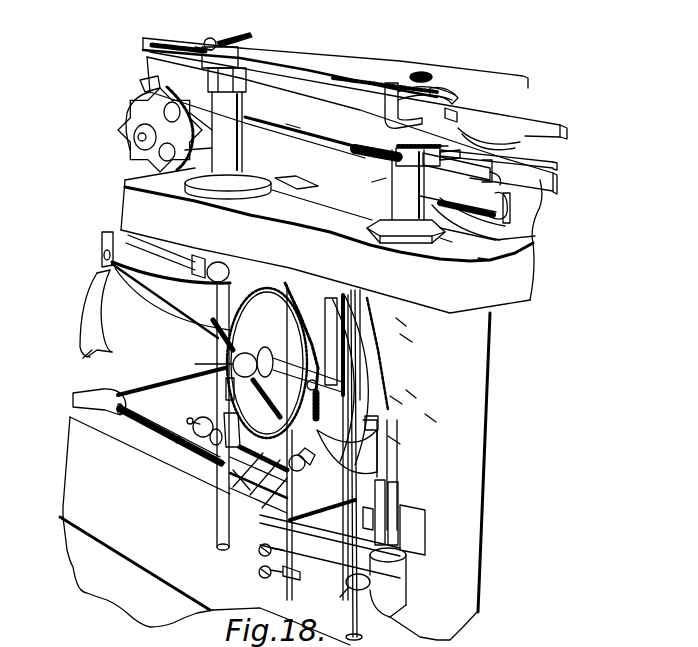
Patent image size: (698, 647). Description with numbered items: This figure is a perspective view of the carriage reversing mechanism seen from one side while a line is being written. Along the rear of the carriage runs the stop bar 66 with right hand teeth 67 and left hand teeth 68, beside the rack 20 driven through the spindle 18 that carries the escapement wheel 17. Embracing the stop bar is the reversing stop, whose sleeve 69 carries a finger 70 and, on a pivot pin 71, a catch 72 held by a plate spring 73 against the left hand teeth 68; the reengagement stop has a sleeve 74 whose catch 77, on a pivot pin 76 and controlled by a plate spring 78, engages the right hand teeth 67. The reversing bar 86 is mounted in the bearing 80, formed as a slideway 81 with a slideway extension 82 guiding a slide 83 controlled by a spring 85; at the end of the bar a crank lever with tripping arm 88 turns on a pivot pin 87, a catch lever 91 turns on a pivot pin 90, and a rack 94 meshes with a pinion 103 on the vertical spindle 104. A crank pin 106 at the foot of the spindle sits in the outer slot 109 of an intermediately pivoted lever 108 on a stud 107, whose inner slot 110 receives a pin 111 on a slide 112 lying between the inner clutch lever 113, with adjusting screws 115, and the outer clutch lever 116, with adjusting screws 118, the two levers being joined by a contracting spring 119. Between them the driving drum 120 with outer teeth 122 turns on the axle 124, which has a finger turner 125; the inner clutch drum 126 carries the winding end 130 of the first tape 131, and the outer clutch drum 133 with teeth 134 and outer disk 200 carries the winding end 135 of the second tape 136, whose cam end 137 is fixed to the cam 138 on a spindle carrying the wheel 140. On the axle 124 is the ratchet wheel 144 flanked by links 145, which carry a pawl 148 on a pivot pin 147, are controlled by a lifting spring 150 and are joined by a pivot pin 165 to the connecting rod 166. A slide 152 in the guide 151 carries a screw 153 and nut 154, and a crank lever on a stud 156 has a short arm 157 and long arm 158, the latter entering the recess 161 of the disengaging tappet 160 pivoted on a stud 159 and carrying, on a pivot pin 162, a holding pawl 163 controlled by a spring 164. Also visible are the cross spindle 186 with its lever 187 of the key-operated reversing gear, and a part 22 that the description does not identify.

The stop bar 66 is at (277, 72).
The right hand teeth 67 is at (160, 42).
The catch 77 is at (200, 44).
The pivot pin 76 is at (206, 40).
The sleeve 74 is at (221, 66).
The plate spring 78 is at (238, 38).
The reversing bar 86 is at (293, 126).
The bar 22 is at (337, 57).
The rack 94 is at (380, 140).
The finger 70 is at (395, 90).
The plate spring 73 is at (432, 80).
The pivot pin 71 is at (445, 92).
The vertical spindle 104 is at (430, 148).
The left hand teeth 68 is at (387, 77).
The sleeve 69 is at (422, 73).
The catch 72 is at (436, 140).
The slideway 81 is at (420, 153).
The pinion 103 is at (445, 158).
The escapement wheel 17 is at (143, 98).
The spindle 18 is at (143, 137).
The first tape 131 is at (230, 147).
The rack 20 is at (350, 124).
The catch lever 91 is at (500, 149).
The tripping arm 88 is at (553, 163).
The pivot pin 87 is at (557, 183).
The inner clutch drum 126 is at (382, 182).
The bearing 80 is at (406, 194).
The slide 83 is at (473, 197).
The slideway extension 82 is at (508, 215).
The spring 85 is at (455, 232).
The pivot pin 90 is at (445, 240).
The winding end 130 is at (483, 260).
The pivot pin 147 is at (288, 280).
The pawl 148 is at (322, 305).
The wheel 140 is at (103, 266).
The cam 138 is at (98, 317).
The second tape 136 is at (100, 330).
The cam end 137 is at (88, 355).
The finger turner 125 is at (210, 343).
The axle 124 is at (205, 370).
The ratchet wheel 144 is at (267, 363).
The links 145 is at (277, 368).
The disengaging tappet 160 is at (226, 383).
The stud 159 is at (196, 421).
The recess 161 is at (226, 424).
The lever 187 is at (100, 398).
The cross spindle 186 is at (134, 418).
The screw 153 is at (157, 427).
The nut 154 is at (176, 442).
The long arm 158 is at (196, 450).
The guide 151 is at (216, 460).
The slide 152 is at (240, 450).
The stud 156 is at (228, 500).
The short arm 157 is at (218, 528).
The pivot pin 162 is at (290, 470).
The spring 164 is at (300, 465).
The holding pawl 163 is at (345, 463).
The outer clutch lever 116 is at (298, 528).
The pin 111 is at (259, 549).
The inner slot 110 is at (259, 571).
The adjusting screws 118 is at (283, 574).
The contracting spring 119 is at (345, 585).
The driving drum 120 is at (400, 322).
The lifting spring 150 is at (405, 338).
The outer teeth 122 is at (400, 362).
The outer clutch drum 133 is at (392, 380).
The teeth 134 is at (410, 394).
The outer disk 200 is at (395, 400).
The winding end 135 is at (430, 418).
The pivot pin 165 is at (372, 422).
The inner clutch lever 113 is at (390, 502).
The adjusting screws 115 is at (392, 512).
The slide 112 is at (390, 522).
The intermediately pivoted lever 108 is at (395, 538).
The outer slot 109 is at (395, 555).
The stud 107 is at (400, 573).
The crank pin 106 is at (405, 590).
The connecting rod 166 is at (478, 613).